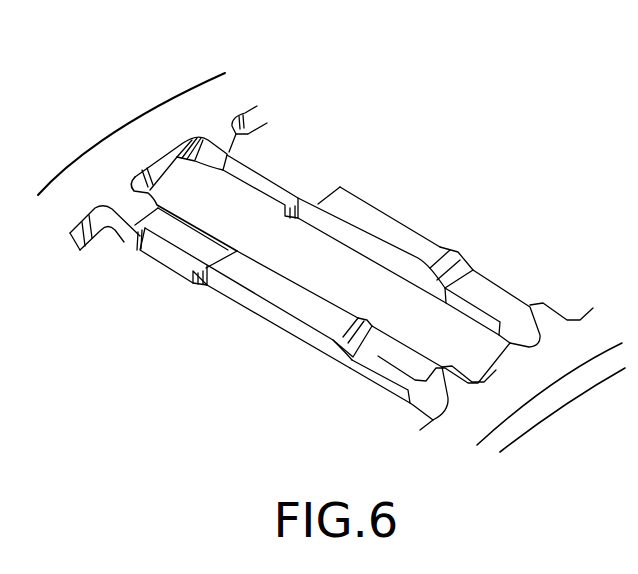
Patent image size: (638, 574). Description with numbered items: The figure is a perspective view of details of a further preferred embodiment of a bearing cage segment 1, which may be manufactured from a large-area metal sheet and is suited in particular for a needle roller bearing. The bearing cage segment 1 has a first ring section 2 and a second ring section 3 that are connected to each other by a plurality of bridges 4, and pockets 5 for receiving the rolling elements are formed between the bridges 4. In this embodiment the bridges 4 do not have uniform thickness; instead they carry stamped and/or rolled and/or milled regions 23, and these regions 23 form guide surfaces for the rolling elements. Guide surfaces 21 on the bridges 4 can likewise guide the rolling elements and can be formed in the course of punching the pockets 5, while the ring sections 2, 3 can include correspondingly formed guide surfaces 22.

The bearing cage segment 1 is at (147, 47).
The first ring section 2 is at (142, 137).
The second ring section 3 is at (510, 382).
The bridges 4 is at (360, 210).
The pockets 5 is at (397, 307).
The guide surfaces 21 is at (268, 197).
The guide surfaces 22 is at (163, 170).
The stamped and/or rolled and/or milled regions 23 is at (283, 192).